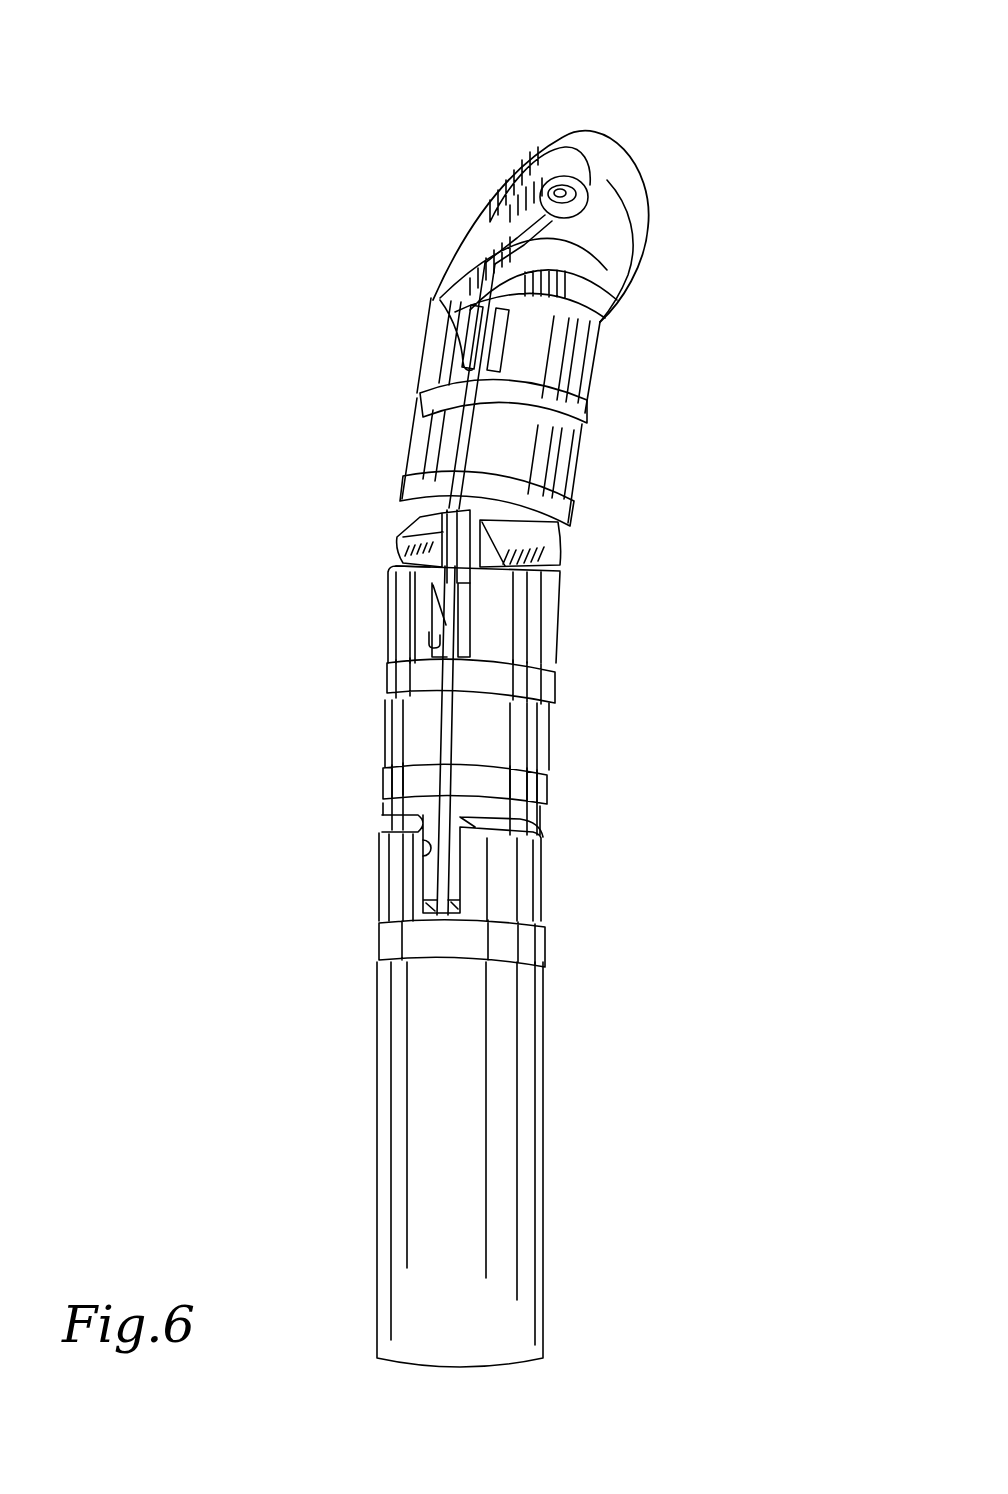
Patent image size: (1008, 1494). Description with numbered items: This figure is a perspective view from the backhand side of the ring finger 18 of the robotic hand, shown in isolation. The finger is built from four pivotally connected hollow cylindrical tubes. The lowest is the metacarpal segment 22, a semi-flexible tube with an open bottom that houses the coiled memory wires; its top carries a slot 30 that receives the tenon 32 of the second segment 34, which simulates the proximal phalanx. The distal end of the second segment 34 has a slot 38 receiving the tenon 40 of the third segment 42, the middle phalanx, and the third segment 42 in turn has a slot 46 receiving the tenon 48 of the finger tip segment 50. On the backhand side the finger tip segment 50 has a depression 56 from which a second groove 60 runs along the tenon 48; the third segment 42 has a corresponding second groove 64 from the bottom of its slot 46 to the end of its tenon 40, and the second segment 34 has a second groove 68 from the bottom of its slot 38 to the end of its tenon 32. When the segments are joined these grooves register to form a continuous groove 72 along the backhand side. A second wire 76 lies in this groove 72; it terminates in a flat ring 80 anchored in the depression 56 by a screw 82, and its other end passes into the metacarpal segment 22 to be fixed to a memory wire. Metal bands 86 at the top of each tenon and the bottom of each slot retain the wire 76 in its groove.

The ring finger 18 is at (708, 128).
The metacarpal segment 22 is at (503, 1150).
The slot 30 is at (420, 858).
The tenon 32 is at (450, 892).
The second segment 34 is at (520, 753).
The slot 38 is at (433, 645).
The tenon 40 is at (447, 537).
The third segment 42 is at (543, 470).
The slot 46 is at (445, 308).
The tenon 48 is at (445, 298).
The finger tip segment 50 is at (647, 192).
The depression 56 is at (587, 190).
The second groove 60 is at (587, 310).
The second groove 64 is at (407, 564).
The second groove 68 is at (418, 818).
The continuous groove 72 is at (423, 443).
The second wire 76 is at (527, 218).
The flat ring 80 is at (523, 215).
The screw 82 is at (578, 190).
The metal bands 86 is at (522, 687).